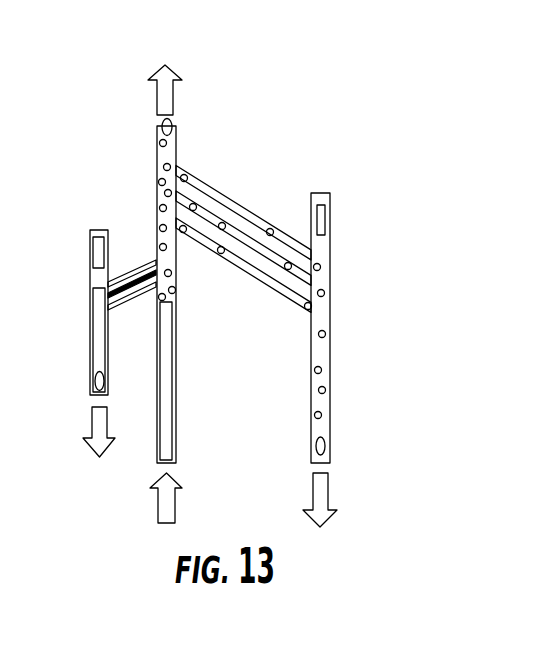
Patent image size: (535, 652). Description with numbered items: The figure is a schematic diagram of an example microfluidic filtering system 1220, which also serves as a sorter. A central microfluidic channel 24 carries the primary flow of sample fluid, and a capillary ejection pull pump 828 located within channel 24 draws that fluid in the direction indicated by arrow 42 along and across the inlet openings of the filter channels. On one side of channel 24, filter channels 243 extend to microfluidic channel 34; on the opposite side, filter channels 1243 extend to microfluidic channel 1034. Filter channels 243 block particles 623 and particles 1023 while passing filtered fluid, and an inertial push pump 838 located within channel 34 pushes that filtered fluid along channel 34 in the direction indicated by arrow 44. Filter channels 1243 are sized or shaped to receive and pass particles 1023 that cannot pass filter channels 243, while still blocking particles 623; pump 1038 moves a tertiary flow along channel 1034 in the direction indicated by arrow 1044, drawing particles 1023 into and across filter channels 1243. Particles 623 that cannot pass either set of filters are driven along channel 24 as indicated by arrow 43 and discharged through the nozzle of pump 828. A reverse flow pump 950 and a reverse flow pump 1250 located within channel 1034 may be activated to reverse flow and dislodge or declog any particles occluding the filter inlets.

The microfluidic filtering system 1220 is at (352, 106).
The microfluidic channel 24 is at (172, 372).
The microfluidic channel 34 is at (90, 334).
The microfluidic channel 1034 is at (330, 372).
The arrow 43 is at (173, 88).
The arrow 42 is at (175, 503).
The arrow 44 is at (107, 425).
The arrow 1044 is at (328, 499).
The capillary ejection pull pump 828 is at (172, 124).
The particles 623 is at (160, 143).
The inertial push pump 838 is at (93, 253).
The reverse flow pump 950 is at (95, 381).
The filter channels 1243 is at (230, 207).
The particles 1023 is at (271, 228).
The pump 1038 is at (325, 222).
The reverse flow pump 1250 is at (316, 447).
The filter channels 243 is at (138, 306).